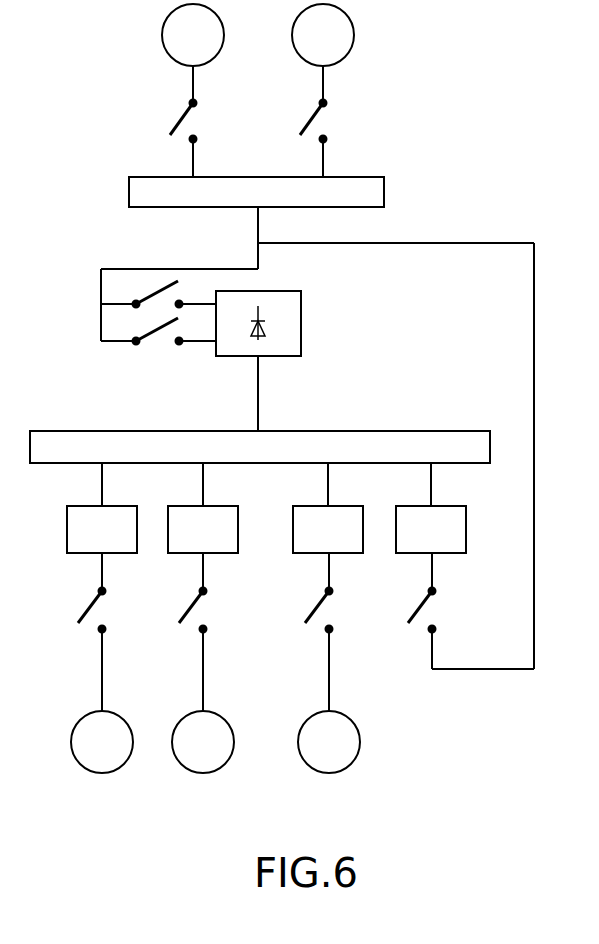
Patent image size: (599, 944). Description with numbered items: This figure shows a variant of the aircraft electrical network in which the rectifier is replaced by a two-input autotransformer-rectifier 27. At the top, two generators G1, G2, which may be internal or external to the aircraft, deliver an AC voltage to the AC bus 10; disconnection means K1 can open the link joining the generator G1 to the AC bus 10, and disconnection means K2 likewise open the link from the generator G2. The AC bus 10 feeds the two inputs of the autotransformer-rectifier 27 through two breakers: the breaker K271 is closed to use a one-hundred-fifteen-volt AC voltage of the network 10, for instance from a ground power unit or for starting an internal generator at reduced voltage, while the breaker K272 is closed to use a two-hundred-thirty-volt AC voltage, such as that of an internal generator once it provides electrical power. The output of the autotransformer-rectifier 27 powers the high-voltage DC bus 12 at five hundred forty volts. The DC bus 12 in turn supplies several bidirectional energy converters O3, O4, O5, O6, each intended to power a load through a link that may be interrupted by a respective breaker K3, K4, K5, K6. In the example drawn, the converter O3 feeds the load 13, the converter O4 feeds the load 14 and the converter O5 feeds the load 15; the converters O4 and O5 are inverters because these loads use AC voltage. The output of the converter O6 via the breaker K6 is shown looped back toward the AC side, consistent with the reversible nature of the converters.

The AC bus 10 is at (384, 188).
The high-voltage DC bus 12 is at (365, 431).
The autotransformer-rectifier 27 is at (301, 326).
The load 13 is at (102, 701).
The load 14 is at (203, 701).
The load 15 is at (329, 701).
The generator G1 is at (193, 35).
The generator G2 is at (323, 35).
The disconnection means K1 is at (201, 121).
The disconnection means K2 is at (331, 121).
The breaker K271 is at (158, 304).
The breaker K272 is at (158, 342).
The breaker K3 is at (105, 593).
The breaker K4 is at (206, 593).
The breaker K5 is at (332, 593).
The breaker K6 is at (471, 611).
The energy converter O3 is at (102, 508).
The energy converter O4 is at (203, 508).
The energy converter O5 is at (328, 508).
The energy converter O6 is at (431, 508).